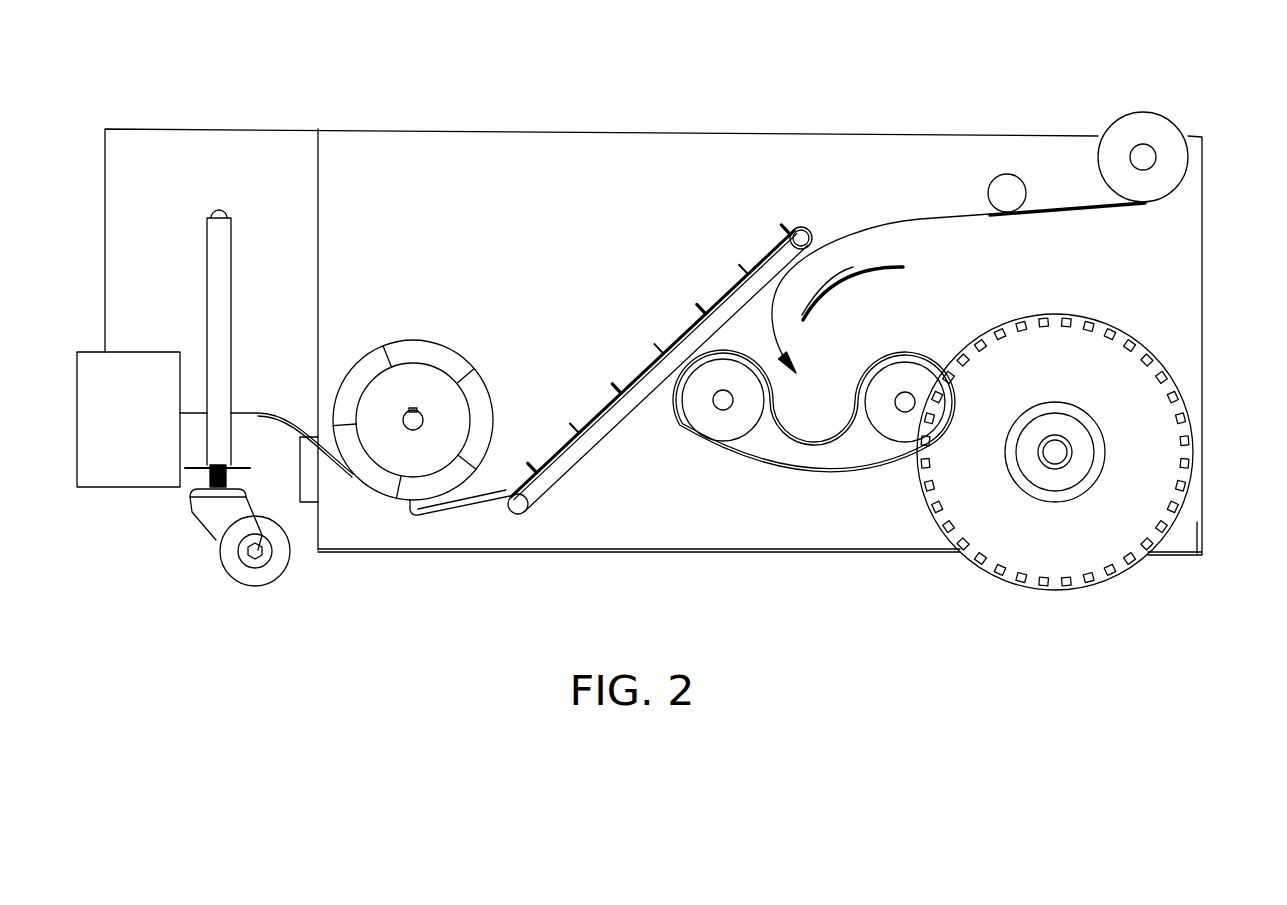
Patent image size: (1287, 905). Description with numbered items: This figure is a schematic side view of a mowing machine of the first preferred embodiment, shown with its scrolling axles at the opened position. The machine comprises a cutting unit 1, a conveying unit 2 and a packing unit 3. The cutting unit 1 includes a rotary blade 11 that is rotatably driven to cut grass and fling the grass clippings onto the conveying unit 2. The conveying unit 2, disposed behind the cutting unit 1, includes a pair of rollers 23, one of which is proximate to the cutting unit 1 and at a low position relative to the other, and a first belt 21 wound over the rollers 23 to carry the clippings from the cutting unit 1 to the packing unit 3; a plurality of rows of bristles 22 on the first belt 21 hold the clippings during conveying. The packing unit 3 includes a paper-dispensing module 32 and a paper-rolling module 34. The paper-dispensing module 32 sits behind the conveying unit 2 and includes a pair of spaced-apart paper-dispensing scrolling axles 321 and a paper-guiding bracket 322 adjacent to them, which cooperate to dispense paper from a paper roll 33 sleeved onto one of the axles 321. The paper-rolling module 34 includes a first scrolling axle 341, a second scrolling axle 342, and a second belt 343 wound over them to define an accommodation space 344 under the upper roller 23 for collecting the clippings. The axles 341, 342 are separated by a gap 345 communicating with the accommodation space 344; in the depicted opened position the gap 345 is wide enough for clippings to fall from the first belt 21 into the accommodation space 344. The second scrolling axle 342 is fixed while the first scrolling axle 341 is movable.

The cutting unit 1 is at (421, 371).
The rotary blade 11 is at (409, 335).
The conveying unit 2 is at (660, 377).
The first belt 21 is at (740, 282).
The rows of bristles 22 is at (698, 302).
The rollers 23 is at (800, 237).
The packing unit 3 is at (953, 164).
The paper-dispensing module 32 is at (1063, 108).
The paper-dispensing scrolling axles 321 is at (1007, 193).
The paper-guiding bracket 322 is at (1073, 210).
The paper roll 33 is at (1183, 133).
The paper-rolling module 34 is at (786, 404).
The first scrolling axle 341 is at (902, 424).
The second scrolling axle 342 is at (700, 420).
The second belt 343 is at (805, 472).
The accommodation space 344 is at (815, 413).
The gap 345 is at (790, 340).